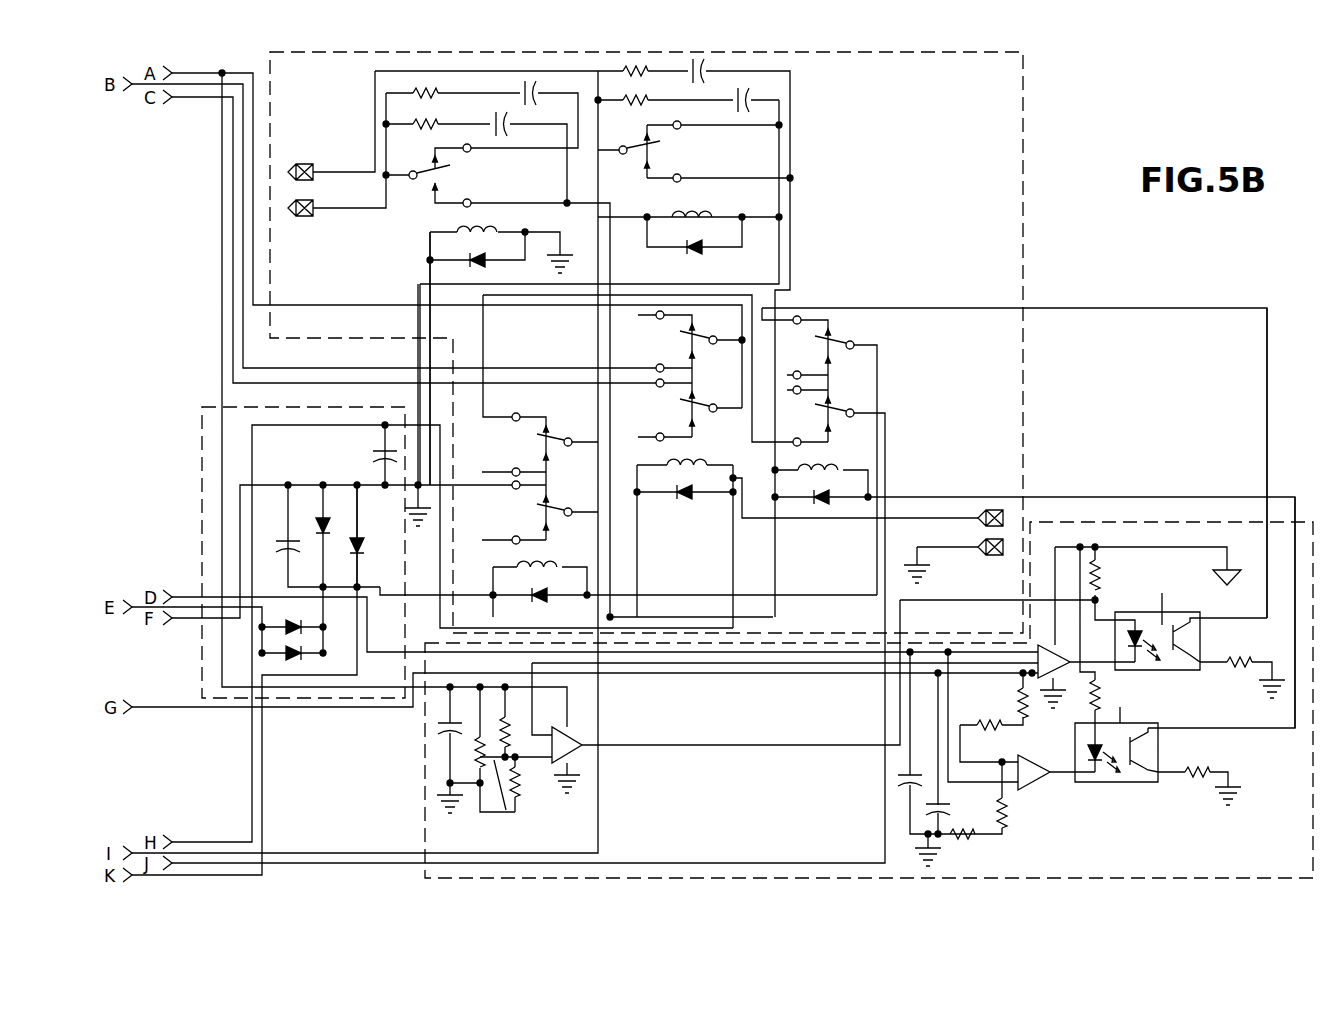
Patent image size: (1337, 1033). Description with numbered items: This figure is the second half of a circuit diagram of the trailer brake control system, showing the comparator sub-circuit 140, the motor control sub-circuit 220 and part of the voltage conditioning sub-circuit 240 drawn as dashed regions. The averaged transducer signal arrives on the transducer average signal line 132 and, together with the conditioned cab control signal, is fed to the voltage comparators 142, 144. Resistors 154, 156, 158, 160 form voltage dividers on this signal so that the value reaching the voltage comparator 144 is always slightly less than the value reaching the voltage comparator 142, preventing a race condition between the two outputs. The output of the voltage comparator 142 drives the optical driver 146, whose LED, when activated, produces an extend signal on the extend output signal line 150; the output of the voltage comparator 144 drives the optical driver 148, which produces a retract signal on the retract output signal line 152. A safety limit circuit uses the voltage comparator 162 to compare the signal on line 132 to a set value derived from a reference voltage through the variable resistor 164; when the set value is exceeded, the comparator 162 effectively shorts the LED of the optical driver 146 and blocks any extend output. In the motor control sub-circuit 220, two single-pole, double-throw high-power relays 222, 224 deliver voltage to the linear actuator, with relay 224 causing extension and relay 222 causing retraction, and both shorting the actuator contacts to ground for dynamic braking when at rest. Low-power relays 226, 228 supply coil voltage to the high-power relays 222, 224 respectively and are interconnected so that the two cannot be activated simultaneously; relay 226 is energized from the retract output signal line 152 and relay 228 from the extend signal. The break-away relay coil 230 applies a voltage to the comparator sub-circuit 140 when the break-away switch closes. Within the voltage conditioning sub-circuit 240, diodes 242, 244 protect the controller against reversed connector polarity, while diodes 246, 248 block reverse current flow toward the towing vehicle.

The transducer average signal line 132 is at (869, 700).
The comparator sub-circuit 140 is at (1050, 587).
The voltage comparator 142 is at (1047, 648).
The voltage comparator 144 is at (1045, 775).
The optical driver 146 is at (1190, 672).
The optical driver 148 is at (1145, 782).
The extend output signal line 150 is at (1267, 430).
The retract output signal line 152 is at (1198, 495).
The resistor 154 is at (1020, 703).
The resistor 156 is at (990, 722).
The resistor 158 is at (1003, 812).
The resistor 160 is at (970, 838).
The voltage comparator 162 is at (570, 735).
The variable resistor 164 is at (508, 812).
The motor control sub-circuit 220 is at (1027, 87).
The high-power relay 222 is at (676, 150).
The high-power relay 224 is at (425, 185).
The low-power relay 226 is at (860, 333).
The low-power relay 228 is at (558, 430).
The relay coil 230 is at (672, 335).
The voltage conditioning sub-circuit 240 is at (269, 465).
The diode 242 is at (325, 515).
The diode 244 is at (360, 540).
The diode 246 is at (258, 627).
The diode 248 is at (258, 655).